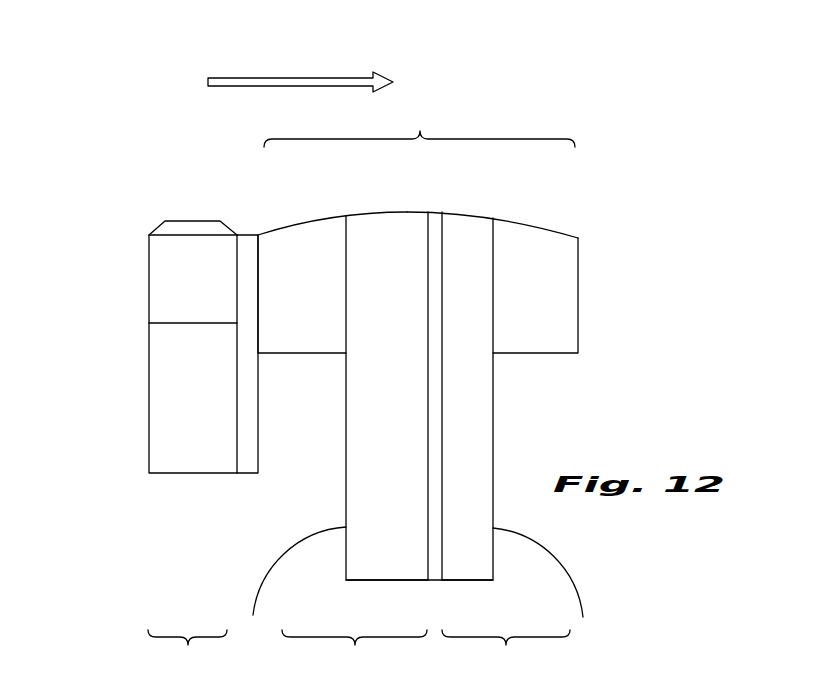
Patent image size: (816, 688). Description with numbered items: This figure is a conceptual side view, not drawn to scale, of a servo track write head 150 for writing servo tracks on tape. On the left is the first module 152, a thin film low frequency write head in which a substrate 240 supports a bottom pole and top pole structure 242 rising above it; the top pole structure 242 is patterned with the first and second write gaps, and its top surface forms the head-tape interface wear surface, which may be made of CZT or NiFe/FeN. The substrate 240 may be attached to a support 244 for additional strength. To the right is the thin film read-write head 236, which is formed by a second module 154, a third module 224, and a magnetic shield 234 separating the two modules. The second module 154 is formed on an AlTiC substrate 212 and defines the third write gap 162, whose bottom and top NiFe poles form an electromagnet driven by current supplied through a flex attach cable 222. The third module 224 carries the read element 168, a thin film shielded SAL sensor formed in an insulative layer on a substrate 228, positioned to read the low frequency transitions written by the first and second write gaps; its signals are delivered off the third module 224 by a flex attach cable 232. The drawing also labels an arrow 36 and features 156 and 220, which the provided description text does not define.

The direction of travel arrow 36 is at (292, 75).
The servo track write head 150 is at (622, 138).
The first module 152 is at (187, 652).
The second module 154 is at (506, 652).
The rib 156 is at (245, 473).
The third write gap 162 is at (484, 207).
The read element 168 is at (357, 208).
The substrate 212 is at (468, 582).
The shoulder 220 is at (538, 355).
The flex attach cable 222 is at (560, 572).
The third module 224 is at (354, 652).
The substrate 228 is at (376, 583).
The flex attach cable 232 is at (280, 572).
The magnetic shield 234 is at (435, 582).
The thin film read-write head 236 is at (419, 126).
The substrate 240 is at (149, 290).
The top pole structure 242 is at (163, 222).
The support 244 is at (149, 398).